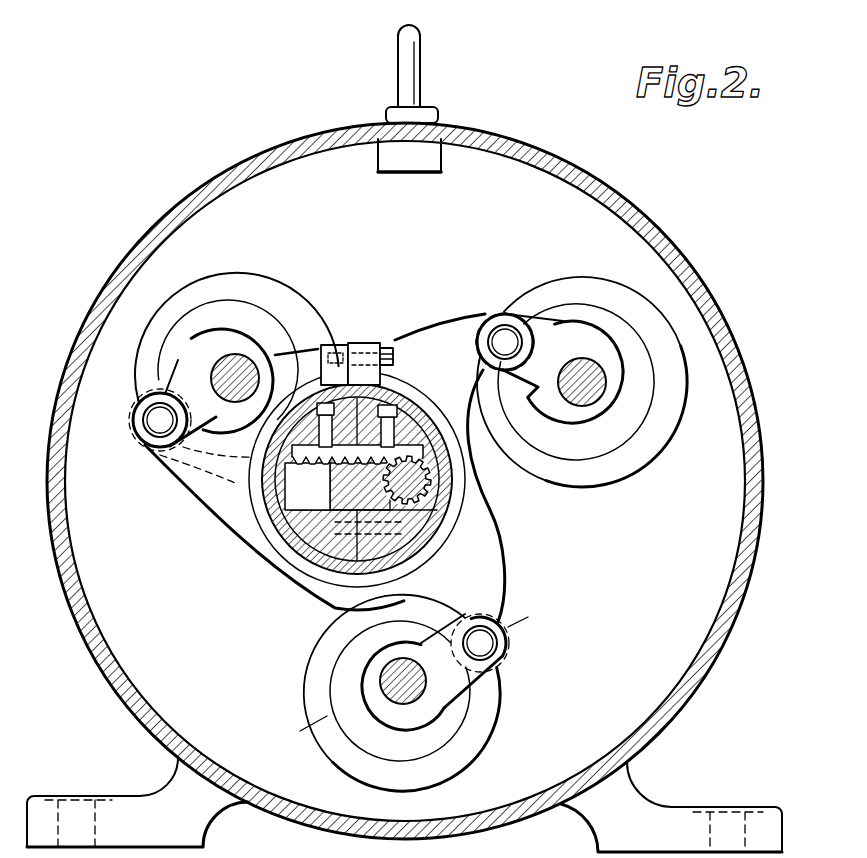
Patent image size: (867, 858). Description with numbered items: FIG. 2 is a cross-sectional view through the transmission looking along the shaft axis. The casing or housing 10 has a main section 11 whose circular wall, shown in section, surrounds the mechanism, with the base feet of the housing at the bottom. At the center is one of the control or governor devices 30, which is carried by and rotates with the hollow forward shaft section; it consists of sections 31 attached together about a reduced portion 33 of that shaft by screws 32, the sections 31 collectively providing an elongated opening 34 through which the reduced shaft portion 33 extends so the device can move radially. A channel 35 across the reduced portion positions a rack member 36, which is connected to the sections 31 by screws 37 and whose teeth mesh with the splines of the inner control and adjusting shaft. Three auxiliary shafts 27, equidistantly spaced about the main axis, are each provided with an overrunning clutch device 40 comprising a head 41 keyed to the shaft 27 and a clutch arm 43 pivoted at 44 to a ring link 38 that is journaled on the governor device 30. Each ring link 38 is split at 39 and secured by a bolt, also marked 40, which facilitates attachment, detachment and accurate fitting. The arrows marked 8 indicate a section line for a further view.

The section line 8 is at (297, 733).
The casing 10 is at (551, 148).
The main section 11 is at (598, 178).
The auxiliary shaft 27 is at (237, 360).
The control or governor device 30 is at (310, 564).
The sections 31 is at (300, 520).
The screws 32 is at (440, 490).
The reduced portion 33 is at (322, 541).
The elongated opening 34 is at (333, 507).
The channel 35 is at (492, 437).
The rack member 36 is at (408, 423).
The screws 37 is at (320, 400).
The ring link 38 is at (200, 491).
The split 39 is at (347, 343).
The overrunning clutch device 40 is at (218, 266).
The clutch head 41 is at (662, 449).
The clutch arm 43 is at (172, 370).
The pivot 44 is at (159, 421).